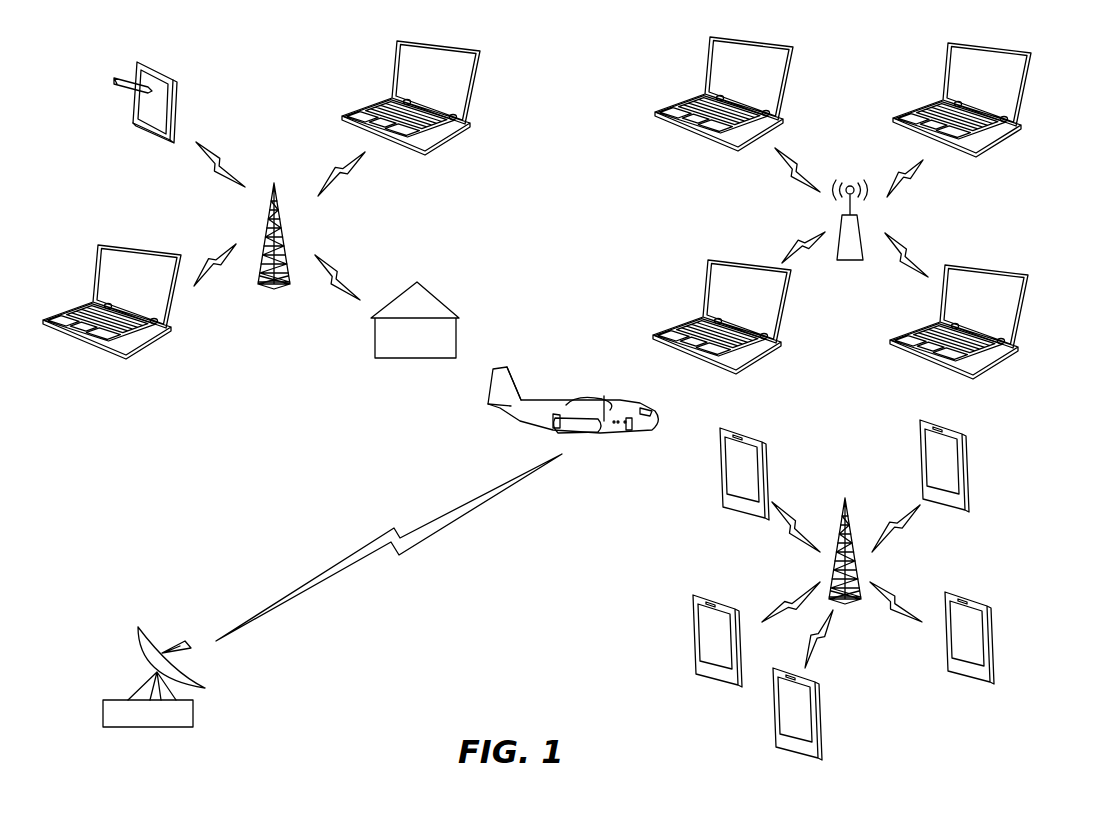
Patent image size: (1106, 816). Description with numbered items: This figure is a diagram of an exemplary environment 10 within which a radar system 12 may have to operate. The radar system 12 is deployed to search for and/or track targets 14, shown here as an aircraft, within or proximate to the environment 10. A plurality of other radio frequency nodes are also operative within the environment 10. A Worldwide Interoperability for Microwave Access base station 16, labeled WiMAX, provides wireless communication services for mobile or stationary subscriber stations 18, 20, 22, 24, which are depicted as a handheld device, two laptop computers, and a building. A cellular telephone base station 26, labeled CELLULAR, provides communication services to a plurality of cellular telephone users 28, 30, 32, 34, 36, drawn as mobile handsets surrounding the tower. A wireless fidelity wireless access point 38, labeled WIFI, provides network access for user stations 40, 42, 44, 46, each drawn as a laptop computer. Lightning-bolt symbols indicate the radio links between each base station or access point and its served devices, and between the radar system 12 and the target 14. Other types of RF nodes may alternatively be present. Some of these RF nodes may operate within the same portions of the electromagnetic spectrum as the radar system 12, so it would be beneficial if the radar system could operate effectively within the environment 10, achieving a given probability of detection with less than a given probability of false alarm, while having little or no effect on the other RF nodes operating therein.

The environment 10 is at (279, 82).
The radar system 12 is at (193, 712).
The target 14 is at (615, 431).
The WiMAX base station 16 is at (268, 224).
The subscriber station 18 is at (176, 98).
The subscriber station 20 is at (95, 278).
The subscriber station 22 is at (477, 92).
The subscriber station 24 is at (440, 300).
The cellular telephone base station 26 is at (840, 515).
The cellular telephone user 28 is at (764, 462).
The cellular telephone user 30 is at (729, 610).
The cellular telephone user 32 is at (822, 714).
The cellular telephone user 34 is at (993, 632).
The cellular telephone user 36 is at (963, 460).
The WiFi wireless access point 38 is at (851, 262).
The user station 40 is at (706, 70).
The user station 42 is at (705, 295).
The user station 44 is at (1018, 318).
The user station 46 is at (1025, 93).